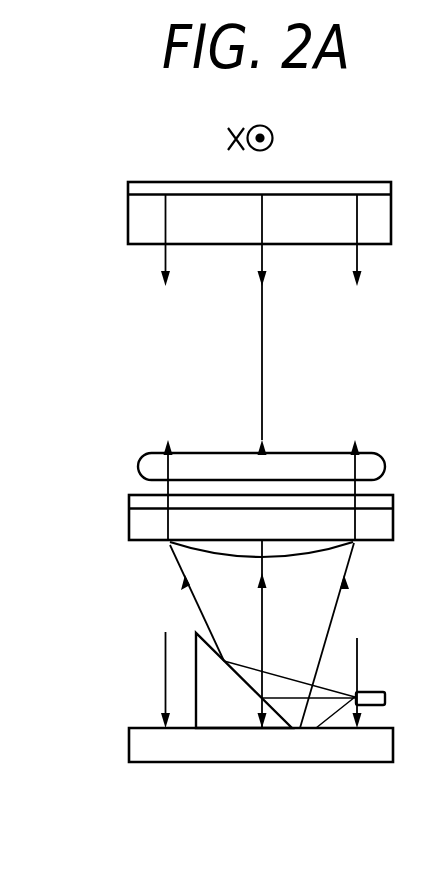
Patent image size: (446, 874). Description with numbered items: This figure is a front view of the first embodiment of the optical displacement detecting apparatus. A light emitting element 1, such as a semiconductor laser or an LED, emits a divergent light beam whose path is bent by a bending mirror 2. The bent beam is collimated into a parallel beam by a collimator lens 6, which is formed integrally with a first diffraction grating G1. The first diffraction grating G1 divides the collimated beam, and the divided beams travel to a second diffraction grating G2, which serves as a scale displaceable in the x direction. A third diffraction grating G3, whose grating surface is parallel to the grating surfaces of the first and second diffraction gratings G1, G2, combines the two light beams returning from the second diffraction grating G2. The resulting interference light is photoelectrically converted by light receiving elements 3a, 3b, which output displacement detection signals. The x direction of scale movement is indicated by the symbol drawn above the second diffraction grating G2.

The second diffraction grating G2 is at (374, 182).
The first diffraction grating G1 is at (292, 495).
The third diffraction grating G3 is at (261, 466).
The collimator lens 6 is at (341, 543).
The bending mirror 2 is at (243, 681).
The light emitting element 1 is at (385, 698).
The light receiving element 3a is at (170, 762).
The light receiving element 3b is at (338, 762).